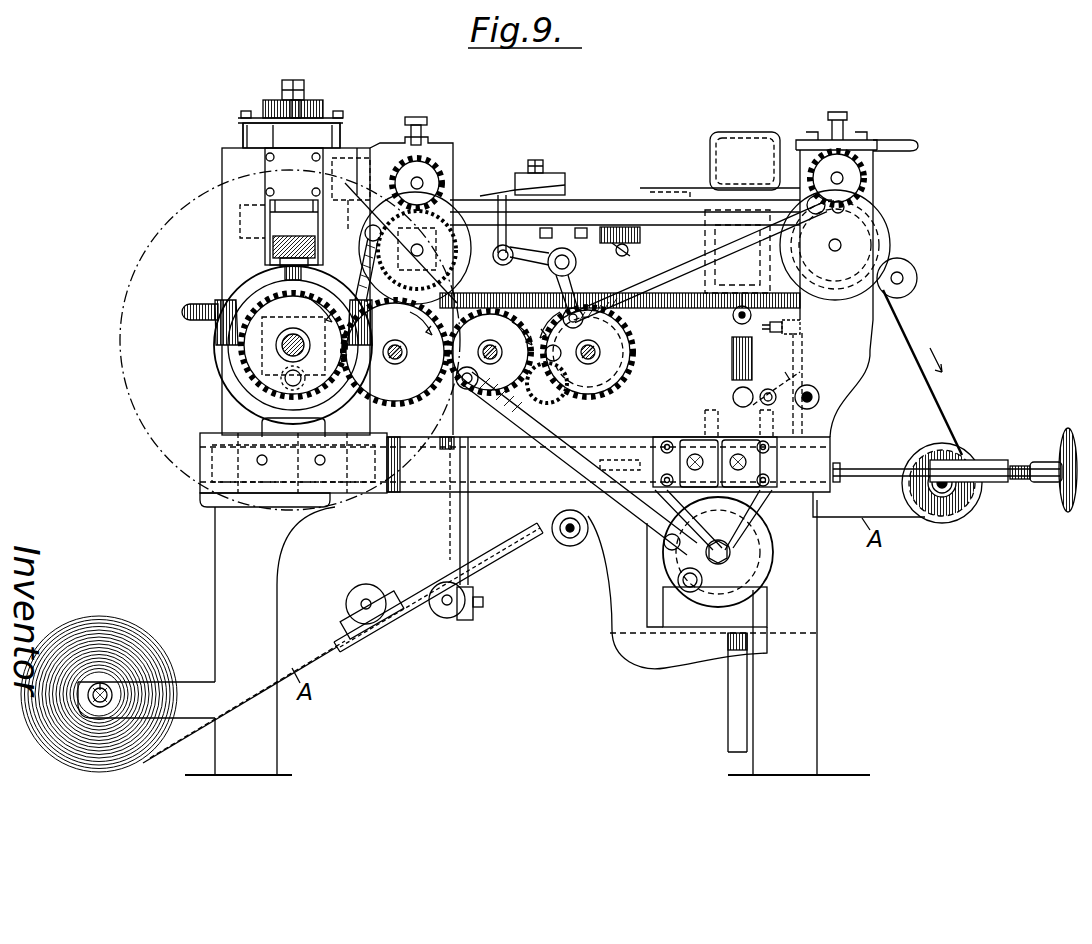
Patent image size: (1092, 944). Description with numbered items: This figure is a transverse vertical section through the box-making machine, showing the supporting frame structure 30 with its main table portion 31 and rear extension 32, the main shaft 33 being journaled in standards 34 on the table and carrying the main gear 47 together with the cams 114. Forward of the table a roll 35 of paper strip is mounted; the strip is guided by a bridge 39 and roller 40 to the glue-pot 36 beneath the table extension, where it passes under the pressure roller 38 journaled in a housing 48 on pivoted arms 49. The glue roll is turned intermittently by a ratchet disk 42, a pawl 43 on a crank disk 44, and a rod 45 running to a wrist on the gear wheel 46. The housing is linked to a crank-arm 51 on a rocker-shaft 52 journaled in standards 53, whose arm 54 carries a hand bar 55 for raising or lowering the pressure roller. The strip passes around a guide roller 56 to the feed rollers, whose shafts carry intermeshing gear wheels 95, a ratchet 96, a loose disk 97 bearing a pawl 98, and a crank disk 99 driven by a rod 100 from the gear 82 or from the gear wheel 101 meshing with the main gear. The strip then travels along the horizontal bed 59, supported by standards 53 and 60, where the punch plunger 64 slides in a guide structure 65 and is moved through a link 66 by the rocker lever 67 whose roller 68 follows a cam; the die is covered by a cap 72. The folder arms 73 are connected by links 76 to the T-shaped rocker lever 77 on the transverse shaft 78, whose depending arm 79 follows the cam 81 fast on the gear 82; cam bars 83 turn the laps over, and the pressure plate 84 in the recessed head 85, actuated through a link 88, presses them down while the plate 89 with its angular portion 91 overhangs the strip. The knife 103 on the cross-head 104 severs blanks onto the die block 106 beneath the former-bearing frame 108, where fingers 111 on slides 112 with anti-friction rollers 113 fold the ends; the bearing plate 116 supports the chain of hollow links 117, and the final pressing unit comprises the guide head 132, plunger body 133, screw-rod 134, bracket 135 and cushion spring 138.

The supporting frame structure 30 is at (516, 637).
The main table portion 31 is at (205, 462).
The rear extension 32 is at (432, 493).
The main shaft 33 is at (276, 345).
The standards 34 is at (262, 428).
The roll 35 is at (142, 626).
The glue-pot 36 is at (775, 552).
The pressure roller 38 is at (740, 445).
The bridge 39 is at (490, 566).
The roller 40 is at (470, 605).
The ratchet disk 42 is at (745, 622).
The pawl 43 is at (600, 534).
The crank disk 44 is at (745, 597).
The rod 45 is at (545, 442).
The gear wheel 46 is at (480, 297).
The gear 47 is at (255, 390).
The housing 48 is at (690, 445).
The arms 49 is at (612, 466).
The crank-arm 51 is at (798, 382).
The rocker-shaft 52 is at (820, 397).
The standards 53 is at (922, 372).
The arm 54 is at (800, 328).
The hand bar 55 is at (192, 313).
The guide roller 56 is at (962, 514).
The horizontal bed 59 is at (660, 180).
The standards 60 is at (445, 155).
The plunger 64 is at (790, 333).
The guide structure 65 is at (737, 251).
The link 66 is at (732, 350).
The rocker lever 67 is at (733, 392).
The roller 68 is at (276, 381).
The cap 72 is at (745, 134).
The folder arms 73 is at (614, 227).
The links 76 is at (629, 250).
The rocker lever 77 is at (625, 258).
The transverse shaft 78 is at (550, 268).
The depending arm 79 is at (572, 292).
The cam 81 is at (628, 358).
The gear 82 is at (632, 326).
The cam bars 83 is at (562, 200).
The pressure plate 84 is at (540, 173).
The recessed head 85 is at (562, 185).
The link 88 is at (497, 252).
The plate 89 is at (660, 200).
The angular portion 91 is at (690, 188).
The gear wheels 95 is at (440, 178).
The ratchet 96 is at (903, 209).
The disk 97 is at (914, 284).
The pawl 98 is at (366, 228).
The crank disk 99 is at (452, 232).
The rod 100 is at (364, 275).
The gear wheel 101 is at (445, 398).
The knife 103 is at (345, 142).
The cross-head 104 is at (411, 128).
The die block 106 is at (240, 218).
The frame 108 is at (240, 135).
The fingers 111 is at (262, 203).
The slides 112 is at (280, 262).
The anti-friction rollers 113 is at (285, 275).
The cams 114 is at (258, 300).
The bearing plate 116 is at (272, 255).
The chain of hollow links 117 is at (275, 240).
The vertical guide head 132 is at (280, 170).
The plunger body 133 is at (291, 134).
The screw-rod 134 is at (292, 80).
The bracket 135 is at (268, 102).
The cushion spring 138 is at (302, 108).